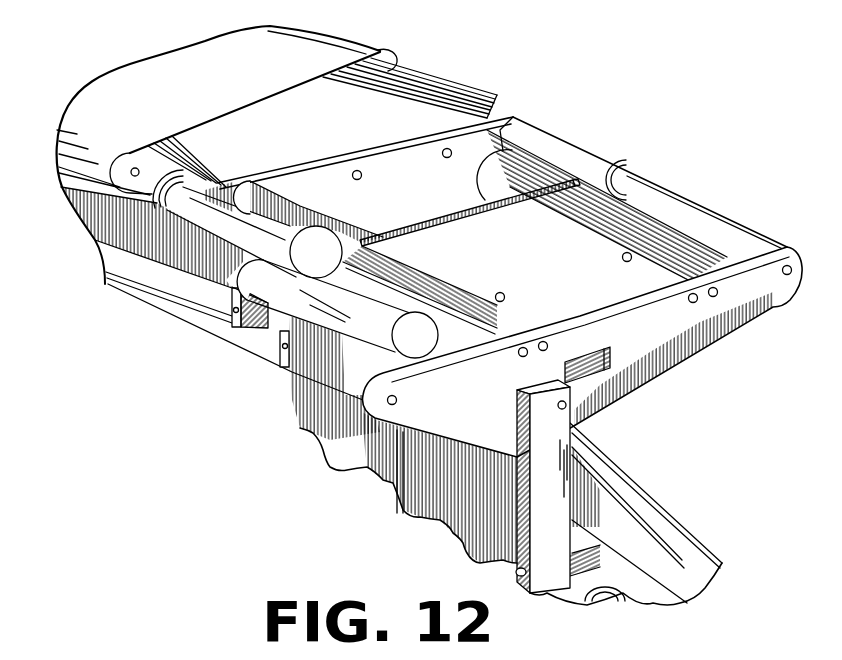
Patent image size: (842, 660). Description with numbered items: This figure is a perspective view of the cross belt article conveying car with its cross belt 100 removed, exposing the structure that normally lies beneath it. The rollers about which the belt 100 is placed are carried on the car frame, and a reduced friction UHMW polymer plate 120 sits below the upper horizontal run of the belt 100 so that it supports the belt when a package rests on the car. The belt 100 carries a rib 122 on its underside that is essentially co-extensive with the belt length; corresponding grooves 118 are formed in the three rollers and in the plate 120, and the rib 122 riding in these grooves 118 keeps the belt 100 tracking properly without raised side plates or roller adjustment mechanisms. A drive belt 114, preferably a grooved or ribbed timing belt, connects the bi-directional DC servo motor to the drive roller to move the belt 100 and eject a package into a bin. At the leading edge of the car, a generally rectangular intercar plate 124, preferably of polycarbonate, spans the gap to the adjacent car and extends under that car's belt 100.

The belt 100 is at (300, 428).
The drive belt 114 is at (184, 216).
The grooves 118 is at (627, 166).
The UHMW polymer plate 120 is at (610, 238).
The rib 122 is at (397, 483).
The intercar plate 124 is at (400, 90).